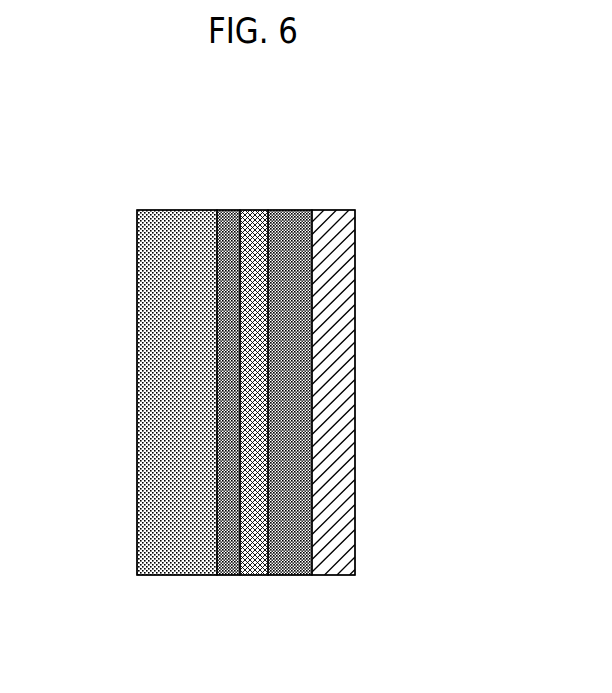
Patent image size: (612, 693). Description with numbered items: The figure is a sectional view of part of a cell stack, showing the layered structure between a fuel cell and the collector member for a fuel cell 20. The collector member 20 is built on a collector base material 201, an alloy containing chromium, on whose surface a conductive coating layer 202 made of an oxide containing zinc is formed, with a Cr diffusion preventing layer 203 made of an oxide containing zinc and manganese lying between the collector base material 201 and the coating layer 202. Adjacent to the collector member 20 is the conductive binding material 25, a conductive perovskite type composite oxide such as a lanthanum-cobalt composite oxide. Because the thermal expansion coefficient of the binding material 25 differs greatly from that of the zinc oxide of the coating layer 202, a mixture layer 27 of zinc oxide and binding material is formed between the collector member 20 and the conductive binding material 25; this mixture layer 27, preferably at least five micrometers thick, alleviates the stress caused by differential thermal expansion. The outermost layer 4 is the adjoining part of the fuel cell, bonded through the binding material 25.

The electrolyte layer 4 is at (150, 210).
The conductive binding material 25 is at (233, 210).
The collector member for a fuel cell 20 is at (318, 330).
The coating layer 202 is at (272, 210).
The Cr diffusion preventing layer 203 is at (300, 210).
The collector base material 201 is at (354, 366).
The mixture layer 27 is at (248, 577).